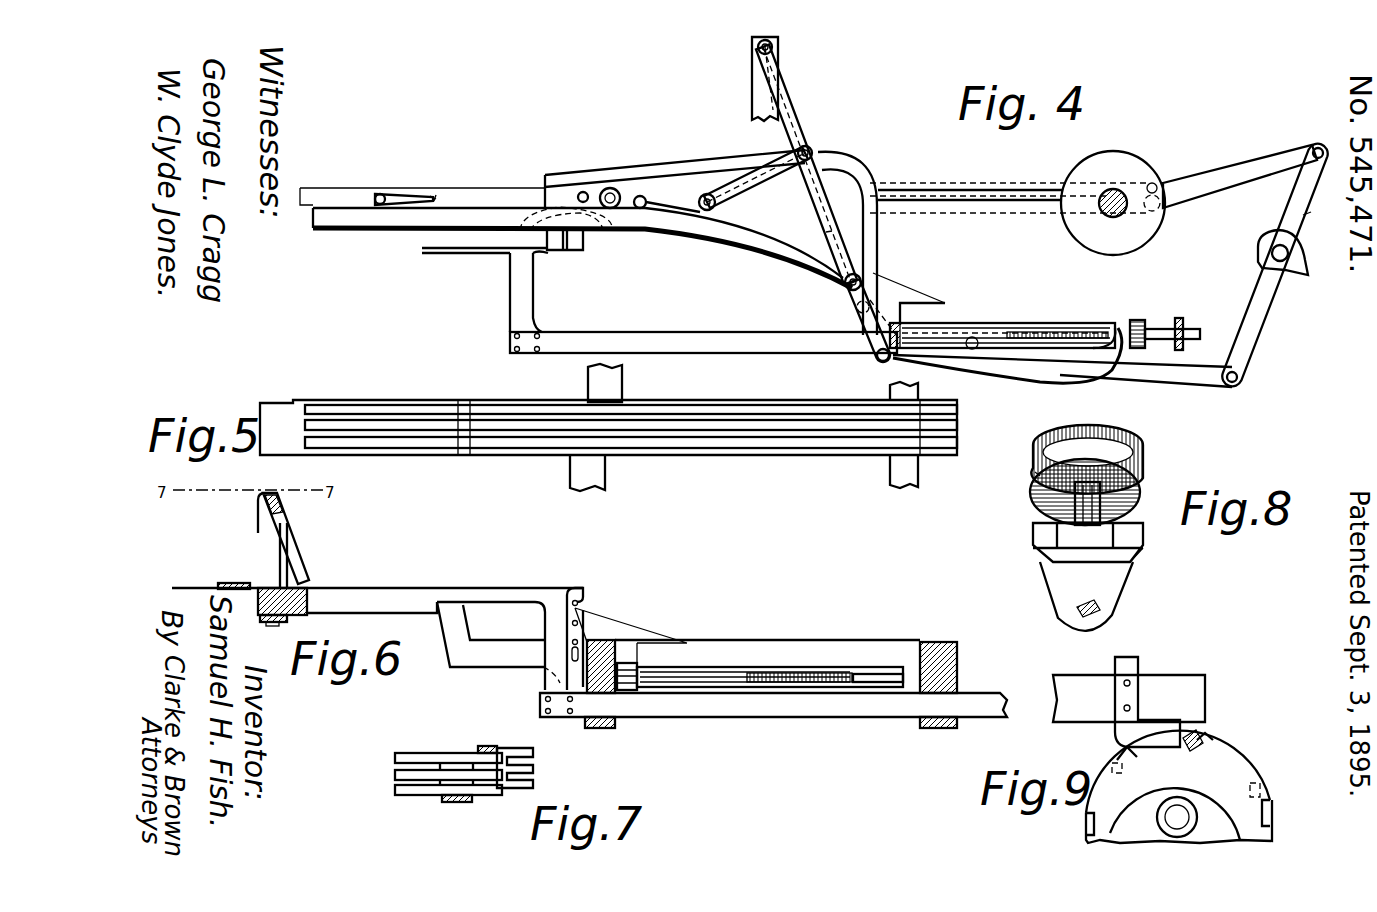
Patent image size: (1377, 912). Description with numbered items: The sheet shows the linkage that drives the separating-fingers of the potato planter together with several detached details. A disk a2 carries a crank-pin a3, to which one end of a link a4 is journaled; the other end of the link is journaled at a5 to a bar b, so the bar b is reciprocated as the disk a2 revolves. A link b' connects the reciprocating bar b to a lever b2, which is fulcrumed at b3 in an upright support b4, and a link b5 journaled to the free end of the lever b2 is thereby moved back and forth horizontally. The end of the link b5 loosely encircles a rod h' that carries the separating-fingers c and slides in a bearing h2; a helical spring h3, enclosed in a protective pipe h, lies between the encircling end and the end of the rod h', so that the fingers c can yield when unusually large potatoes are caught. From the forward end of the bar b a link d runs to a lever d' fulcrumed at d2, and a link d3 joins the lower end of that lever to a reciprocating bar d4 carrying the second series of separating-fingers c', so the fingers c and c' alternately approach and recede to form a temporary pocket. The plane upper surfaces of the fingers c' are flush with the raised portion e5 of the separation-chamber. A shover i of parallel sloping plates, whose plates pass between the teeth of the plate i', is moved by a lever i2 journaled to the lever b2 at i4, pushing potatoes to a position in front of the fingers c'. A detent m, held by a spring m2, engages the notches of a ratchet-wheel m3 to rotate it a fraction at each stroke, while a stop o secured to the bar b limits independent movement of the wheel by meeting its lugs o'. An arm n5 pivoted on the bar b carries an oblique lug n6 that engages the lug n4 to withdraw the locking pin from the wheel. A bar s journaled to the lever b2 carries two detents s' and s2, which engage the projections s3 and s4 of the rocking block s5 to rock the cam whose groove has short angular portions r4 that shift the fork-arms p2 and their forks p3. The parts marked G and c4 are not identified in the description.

In FIG. 4, the reciprocating bar b is at (681, 193).
In FIG. 9, the reciprocating bar b is at (1129, 698).
In FIG. 4, the bar s is at (582, 248).
In FIG. 4, the obliquely-situated lug n4 is at (383, 194).
In FIG. 4, the arm n5 is at (435, 197).
In FIG. 4, the obliquely-situated lug n6 is at (460, 196).
In FIG. 4, the second series of separating-fingers c' is at (495, 290).
In FIG. 6, the second series of separating-fingers c' is at (491, 625).
In FIG. 4, the reciprocating bar d4 is at (710, 335).
In FIG. 6, the reciprocating bar d4 is at (752, 705).
In FIG. 4, the shover i is at (582, 252).
In FIG. 6, the shover i is at (229, 554).
In FIG. 7, the shover i is at (448, 760).
In FIG. 4, the detent s' is at (537, 243).
In FIG. 4, the detent s2 is at (613, 233).
In FIG. 4, the detent m is at (570, 196).
In FIG. 4, the spring m2 is at (596, 190).
In FIG. 4, the lever i2 is at (612, 176).
In FIG. 6, the lever i2 is at (222, 582).
In FIG. 7, the lever i2 is at (460, 802).
In FIG. 4, the journal a5 is at (710, 193).
In FIG. 4, the fulcrum b3 is at (775, 48).
In FIG. 4, the upright support b4 is at (752, 103).
In FIG. 4, the link b' is at (808, 168).
In FIG. 4, the lever b2 is at (828, 232).
In FIG. 4, the journal i4 is at (852, 310).
In FIG. 4, the bracket G is at (903, 292).
In FIG. 4, the pipe h is at (1002, 323).
In FIG. 6, the pipe h is at (760, 651).
In FIG. 4, the helical spring h3 is at (1063, 330).
In FIG. 4, the rod h' is at (1172, 312).
In FIG. 6, the rod h' is at (883, 647).
In FIG. 4, the bearing h2 is at (1184, 320).
In FIG. 4, the link b5 is at (977, 367).
In FIG. 4, the link d3 is at (1157, 387).
In FIG. 4, the link d is at (1263, 265).
In FIG. 4, the lever d' is at (1323, 215).
In FIG. 4, the fulcrum d2 is at (1290, 253).
In FIG. 4, the link a4 is at (947, 190).
In FIG. 4, the disk a2 is at (1133, 163).
In FIG. 4, the crank-pin a3 is at (1170, 176).
In FIG. 5, the raised portion of the separation-chamber e5 is at (380, 400).
In FIG. 6, the raised portion of the separation-chamber e5 is at (380, 588).
In FIG. 5, the clamp c4 is at (690, 400).
In FIG. 6, the toothed plate i' is at (283, 538).
In FIG. 7, the toothed plate i' is at (537, 768).
In FIG. 6, the separating-fingers c is at (631, 627).
In FIG. 8, the angular portions of cam groove r4 is at (1097, 457).
In FIG. 8, the forks p3 is at (1143, 488).
In FIG. 8, the fork-arms p2 is at (1035, 472).
In FIG. 8, the rocking block s5 is at (1088, 554).
In FIG. 8, the projection s3 is at (1042, 558).
In FIG. 8, the projection s4 is at (1137, 562).
In FIG. 9, the stop o is at (1148, 698).
In FIG. 9, the lugs o' is at (1160, 736).
In FIG. 9, the ratchet-wheel m3 is at (1179, 787).